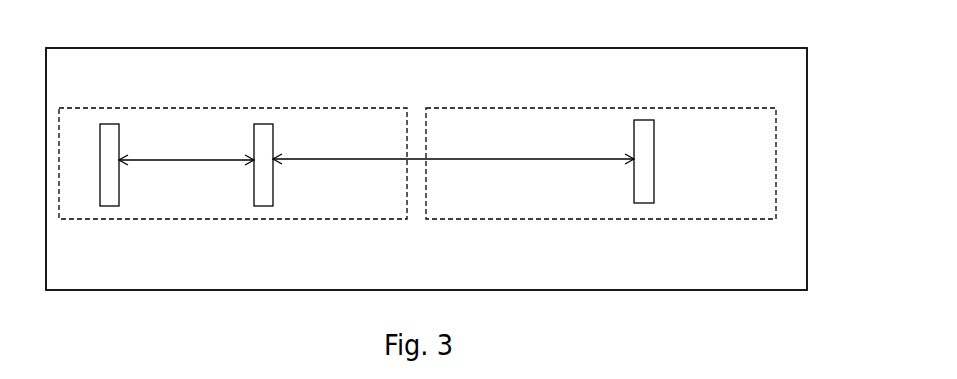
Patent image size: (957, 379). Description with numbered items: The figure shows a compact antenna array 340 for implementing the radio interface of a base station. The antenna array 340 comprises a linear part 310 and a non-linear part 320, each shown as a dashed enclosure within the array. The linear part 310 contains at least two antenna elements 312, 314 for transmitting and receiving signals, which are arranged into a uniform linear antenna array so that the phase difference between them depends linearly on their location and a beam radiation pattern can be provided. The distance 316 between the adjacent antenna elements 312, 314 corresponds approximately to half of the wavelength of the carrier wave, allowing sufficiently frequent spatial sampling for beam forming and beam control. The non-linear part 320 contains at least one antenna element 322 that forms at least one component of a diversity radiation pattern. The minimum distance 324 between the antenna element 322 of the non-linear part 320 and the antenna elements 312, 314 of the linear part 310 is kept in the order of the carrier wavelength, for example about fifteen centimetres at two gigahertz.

The antenna array 340 is at (503, 48).
The linear part 310 is at (200, 108).
The non-linear part 320 is at (478, 108).
The antenna element 312 is at (120, 129).
The antenna element 314 is at (274, 137).
The antenna element 322 is at (633, 130).
The distance 316 is at (155, 160).
The minimum distance 324 is at (447, 159).